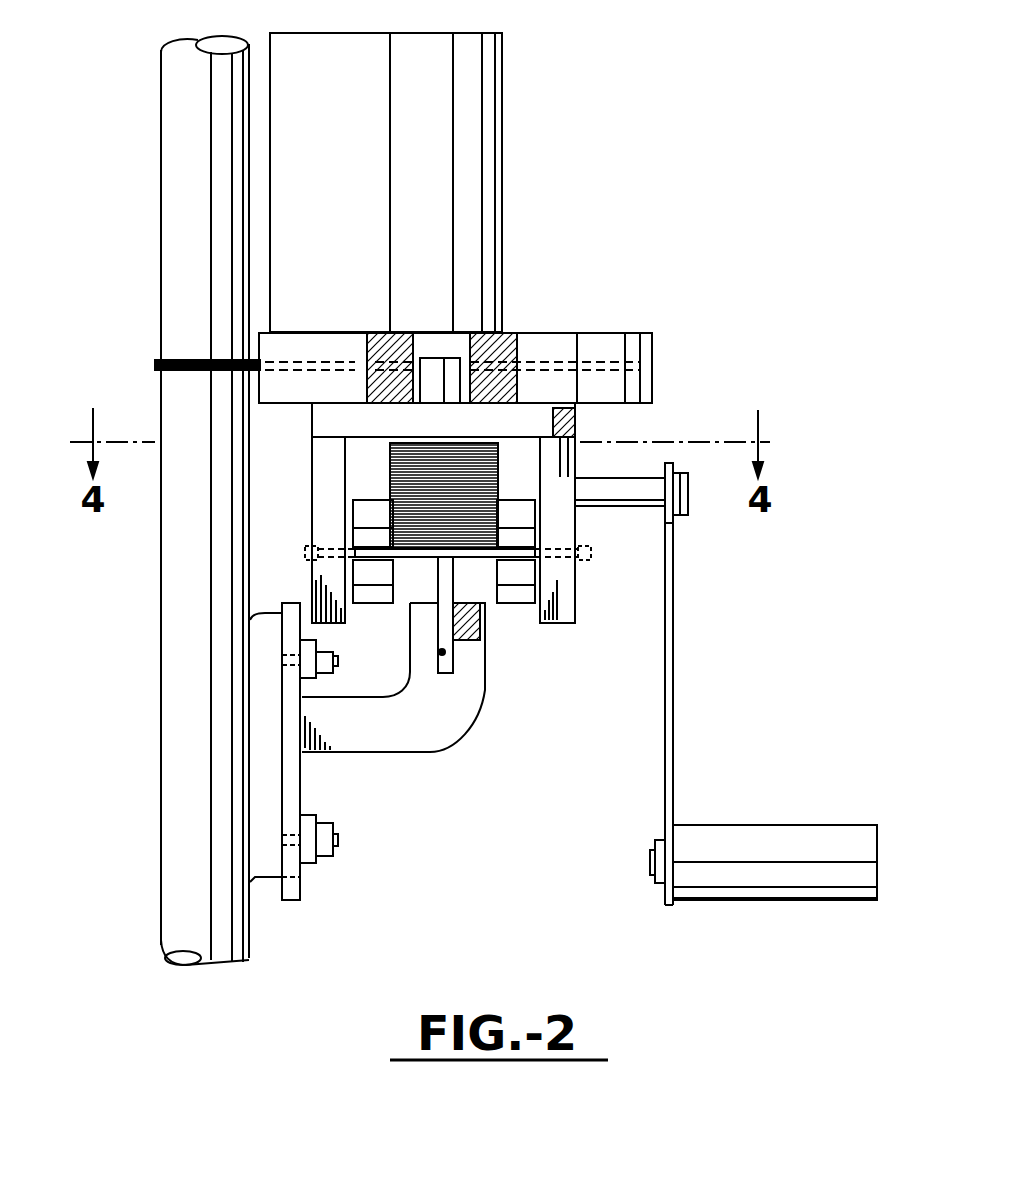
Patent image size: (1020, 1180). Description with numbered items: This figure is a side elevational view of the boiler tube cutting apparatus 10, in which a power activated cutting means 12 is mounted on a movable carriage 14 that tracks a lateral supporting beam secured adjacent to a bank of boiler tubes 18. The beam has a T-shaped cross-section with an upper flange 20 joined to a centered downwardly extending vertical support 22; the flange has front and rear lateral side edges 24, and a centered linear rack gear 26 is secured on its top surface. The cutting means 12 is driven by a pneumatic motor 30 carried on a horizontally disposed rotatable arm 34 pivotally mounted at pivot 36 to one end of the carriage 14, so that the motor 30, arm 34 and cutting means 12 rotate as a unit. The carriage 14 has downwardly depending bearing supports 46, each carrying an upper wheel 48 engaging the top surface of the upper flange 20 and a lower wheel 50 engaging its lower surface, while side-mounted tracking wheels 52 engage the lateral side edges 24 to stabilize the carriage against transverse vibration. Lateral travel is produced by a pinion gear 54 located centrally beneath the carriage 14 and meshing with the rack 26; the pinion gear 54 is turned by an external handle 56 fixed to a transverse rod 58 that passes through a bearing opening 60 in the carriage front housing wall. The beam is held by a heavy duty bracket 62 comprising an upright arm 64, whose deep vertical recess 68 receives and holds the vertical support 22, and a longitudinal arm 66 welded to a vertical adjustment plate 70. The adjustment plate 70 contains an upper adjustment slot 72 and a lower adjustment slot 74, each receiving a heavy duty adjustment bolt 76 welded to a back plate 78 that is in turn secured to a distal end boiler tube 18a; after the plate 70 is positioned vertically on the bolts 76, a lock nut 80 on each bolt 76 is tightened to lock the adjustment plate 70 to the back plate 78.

The boiler tube cutting apparatus 10 is at (600, 228).
The cutting means 12 is at (193, 360).
The movable carriage 14 is at (576, 425).
The boiler tubes 18 is at (172, 143).
The distal end boiler tube 18a is at (245, 932).
The upper flange 20 is at (425, 556).
The vertical support 22 is at (452, 642).
The lateral side edges 24 is at (357, 552).
The linear rack gear 26 is at (472, 556).
The motor 30 is at (500, 72).
The rotatable arm 34 is at (652, 340).
The pivot 36 is at (460, 345).
The bearing supports 46 is at (312, 470).
The upper wheel 48 is at (362, 510).
The lower wheel 50 is at (362, 576).
The tracking wheel 52 is at (308, 550).
The pinion gear 54 is at (414, 424).
The external handle 56 is at (788, 890).
The transverse rod 58 is at (652, 502).
The bearing opening 60 is at (575, 470).
The bracket 62 is at (421, 704).
The upright arm 64 is at (470, 692).
The longitudinal arm 66 is at (452, 742).
The vertical recess 68 is at (440, 652).
The vertical adjustment plate 70 is at (300, 885).
The upper adjustment slot 72 is at (282, 641).
The lower adjustment slot 74 is at (300, 813).
The adjustment bolt 76 is at (320, 668).
The back plate 78 is at (266, 836).
The lock nut 80 is at (315, 856).